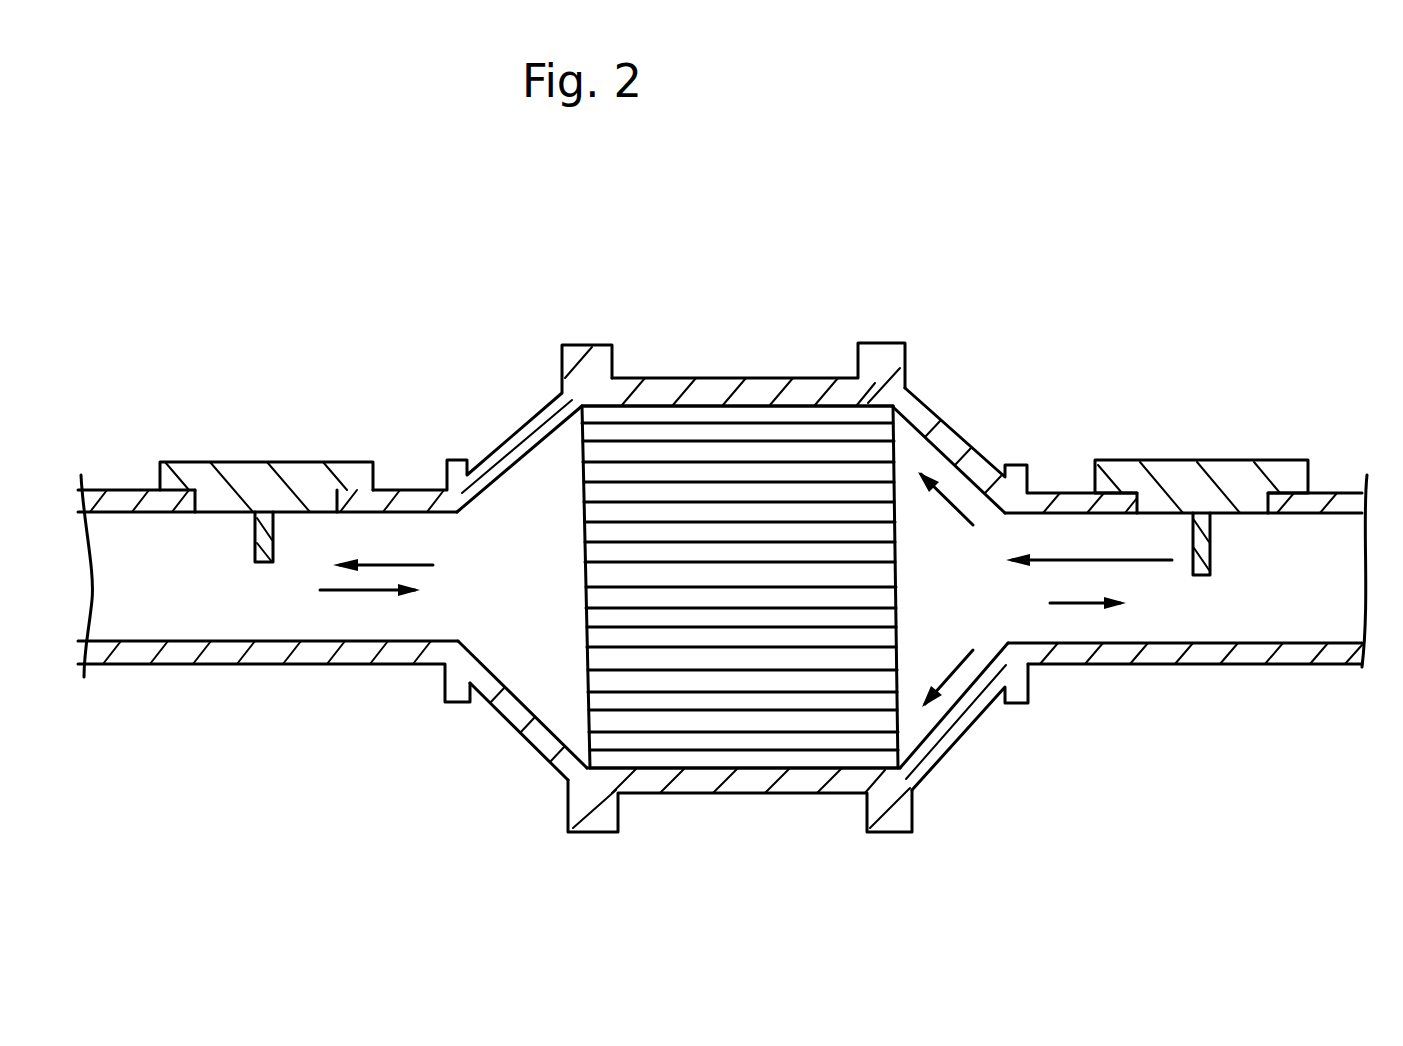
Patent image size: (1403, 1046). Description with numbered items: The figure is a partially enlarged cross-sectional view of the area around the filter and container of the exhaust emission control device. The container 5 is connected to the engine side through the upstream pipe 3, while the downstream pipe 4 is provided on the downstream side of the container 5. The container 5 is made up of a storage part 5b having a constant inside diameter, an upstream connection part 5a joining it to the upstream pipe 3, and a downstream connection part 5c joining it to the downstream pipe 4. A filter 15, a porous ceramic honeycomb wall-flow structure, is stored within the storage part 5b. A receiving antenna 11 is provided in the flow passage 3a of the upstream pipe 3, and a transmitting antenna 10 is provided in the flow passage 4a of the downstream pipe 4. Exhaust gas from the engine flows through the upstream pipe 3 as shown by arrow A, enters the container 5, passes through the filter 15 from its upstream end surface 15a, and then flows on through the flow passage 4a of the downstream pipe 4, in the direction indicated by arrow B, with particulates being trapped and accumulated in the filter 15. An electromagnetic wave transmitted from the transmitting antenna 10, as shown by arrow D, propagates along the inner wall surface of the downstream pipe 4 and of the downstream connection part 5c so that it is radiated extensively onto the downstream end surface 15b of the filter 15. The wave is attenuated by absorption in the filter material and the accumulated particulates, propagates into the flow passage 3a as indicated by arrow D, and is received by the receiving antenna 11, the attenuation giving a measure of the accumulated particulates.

The upstream pipe 3 is at (114, 497).
The flow passage of the upstream pipe 3a is at (163, 597).
The downstream pipe 4 is at (1237, 652).
The flow passage of the downstream pipe 4a is at (1330, 617).
The container 5 is at (738, 555).
The upstream connection part 5a is at (493, 463).
The storage part 5b is at (713, 383).
The downstream connection part 5c is at (973, 452).
The transmitting antenna 10 is at (1210, 540).
The receiving antenna 11 is at (256, 528).
The filter 15 is at (747, 520).
The upstream end surface 15a is at (578, 460).
The downstream end surface 15b is at (897, 588).
The arrow A is at (375, 595).
The exhaust gas flow direction B is at (1083, 605).
The arrow D is at (405, 563).